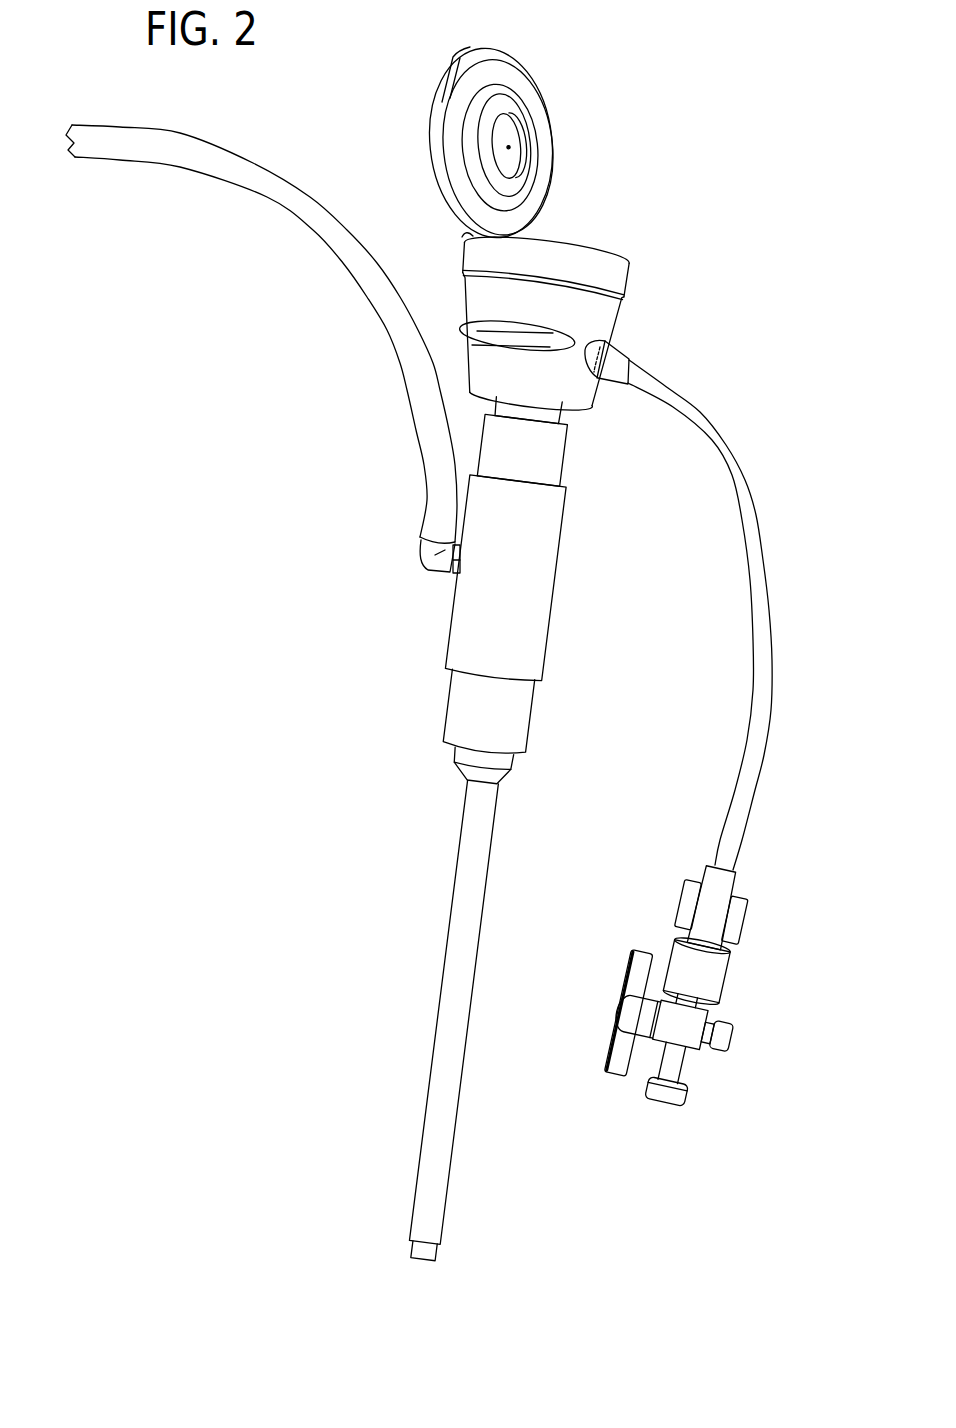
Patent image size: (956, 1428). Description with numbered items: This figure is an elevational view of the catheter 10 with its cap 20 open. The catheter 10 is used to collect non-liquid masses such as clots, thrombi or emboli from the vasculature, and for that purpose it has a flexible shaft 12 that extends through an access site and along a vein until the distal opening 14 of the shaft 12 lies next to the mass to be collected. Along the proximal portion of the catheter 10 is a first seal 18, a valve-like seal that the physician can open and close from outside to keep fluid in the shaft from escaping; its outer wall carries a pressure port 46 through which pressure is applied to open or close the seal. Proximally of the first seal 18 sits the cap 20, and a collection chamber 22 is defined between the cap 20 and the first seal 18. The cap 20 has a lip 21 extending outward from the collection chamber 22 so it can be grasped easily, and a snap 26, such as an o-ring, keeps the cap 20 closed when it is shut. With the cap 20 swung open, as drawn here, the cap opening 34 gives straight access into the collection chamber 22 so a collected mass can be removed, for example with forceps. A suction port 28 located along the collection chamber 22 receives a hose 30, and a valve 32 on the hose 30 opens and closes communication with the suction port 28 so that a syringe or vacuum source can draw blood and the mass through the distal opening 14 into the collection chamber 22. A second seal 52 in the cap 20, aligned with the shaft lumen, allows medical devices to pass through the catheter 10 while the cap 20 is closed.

The catheter 10 is at (712, 182).
The shaft 12 is at (441, 990).
The distal opening 14 is at (421, 1260).
The first seal 18 is at (552, 606).
The cap 20 is at (433, 169).
The lip 21 is at (448, 70).
The collection chamber 22 is at (626, 327).
The snap 26 is at (465, 120).
The suction port 28 is at (600, 387).
The hose 30 is at (750, 598).
The valve 32 is at (622, 1007).
The cap opening 34 is at (578, 249).
The pressure port 46 is at (430, 568).
The second seal 52 is at (514, 143).